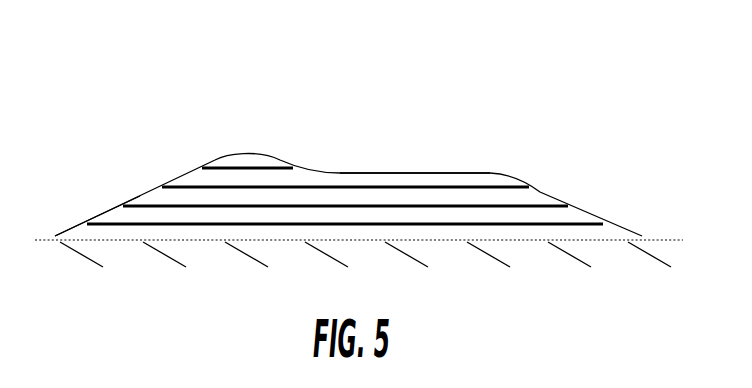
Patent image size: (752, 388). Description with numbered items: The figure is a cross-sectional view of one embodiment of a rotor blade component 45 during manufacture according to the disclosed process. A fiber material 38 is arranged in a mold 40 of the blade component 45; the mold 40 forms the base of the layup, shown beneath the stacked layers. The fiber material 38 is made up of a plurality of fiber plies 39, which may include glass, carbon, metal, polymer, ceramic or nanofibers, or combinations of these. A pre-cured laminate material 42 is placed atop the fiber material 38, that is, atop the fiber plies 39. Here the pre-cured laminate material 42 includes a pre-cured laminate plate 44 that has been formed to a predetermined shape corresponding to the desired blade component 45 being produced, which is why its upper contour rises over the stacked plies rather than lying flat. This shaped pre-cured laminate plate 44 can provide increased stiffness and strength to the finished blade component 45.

The fiber material 38 is at (111, 211).
The fiber plies 39 is at (144, 205).
The mold 40 is at (660, 238).
The pre-cured laminate material 42 is at (477, 172).
The pre-cured laminate plate 44 is at (413, 173).
The blade component 45 is at (583, 82).